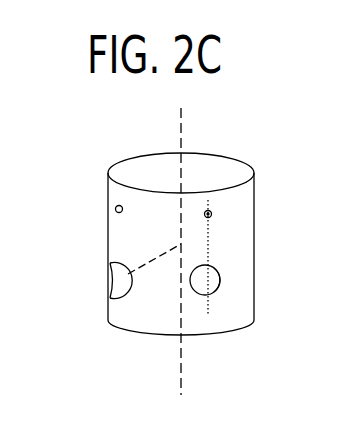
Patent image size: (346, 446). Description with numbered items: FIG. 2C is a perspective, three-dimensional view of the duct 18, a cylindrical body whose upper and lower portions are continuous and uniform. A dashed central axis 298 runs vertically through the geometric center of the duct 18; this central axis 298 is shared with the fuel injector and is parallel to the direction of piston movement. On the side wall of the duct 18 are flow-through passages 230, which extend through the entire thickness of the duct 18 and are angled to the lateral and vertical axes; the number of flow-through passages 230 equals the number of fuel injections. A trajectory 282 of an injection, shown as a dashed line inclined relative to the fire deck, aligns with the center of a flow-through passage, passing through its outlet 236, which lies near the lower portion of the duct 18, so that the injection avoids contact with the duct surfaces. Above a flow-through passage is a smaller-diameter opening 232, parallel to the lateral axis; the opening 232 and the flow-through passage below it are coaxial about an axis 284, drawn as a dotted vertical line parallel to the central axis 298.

The duct 18 is at (238, 157).
The central axis 298 is at (182, 128).
The openings 232 is at (116, 206).
The outlet 236 is at (124, 276).
The trajectories 282 is at (148, 261).
The axis 284 is at (208, 243).
The flow-through passages 230 is at (227, 276).